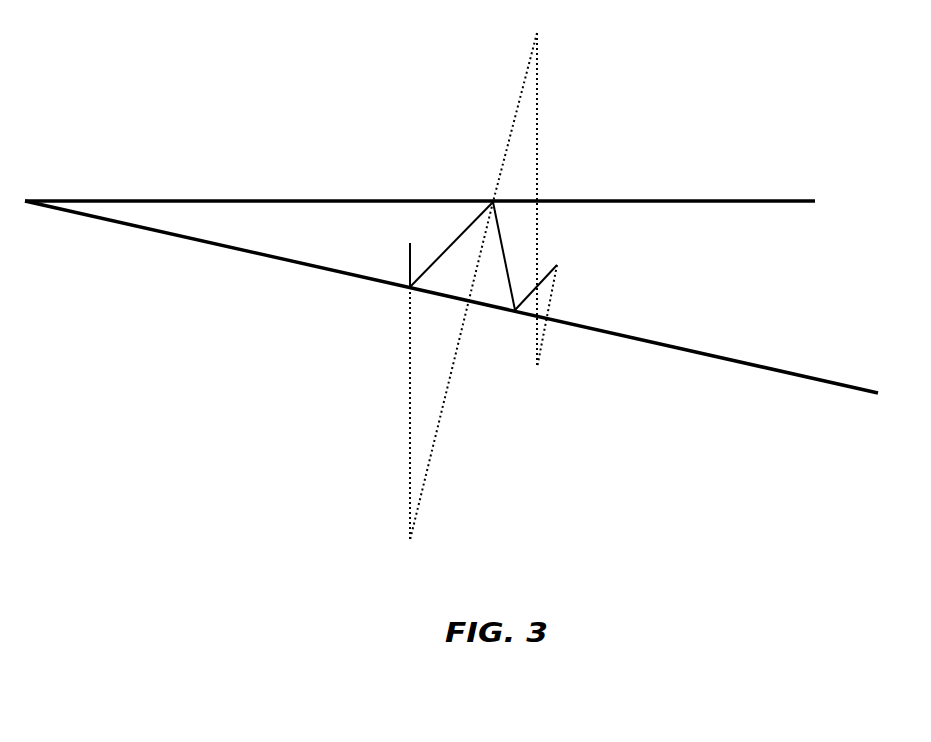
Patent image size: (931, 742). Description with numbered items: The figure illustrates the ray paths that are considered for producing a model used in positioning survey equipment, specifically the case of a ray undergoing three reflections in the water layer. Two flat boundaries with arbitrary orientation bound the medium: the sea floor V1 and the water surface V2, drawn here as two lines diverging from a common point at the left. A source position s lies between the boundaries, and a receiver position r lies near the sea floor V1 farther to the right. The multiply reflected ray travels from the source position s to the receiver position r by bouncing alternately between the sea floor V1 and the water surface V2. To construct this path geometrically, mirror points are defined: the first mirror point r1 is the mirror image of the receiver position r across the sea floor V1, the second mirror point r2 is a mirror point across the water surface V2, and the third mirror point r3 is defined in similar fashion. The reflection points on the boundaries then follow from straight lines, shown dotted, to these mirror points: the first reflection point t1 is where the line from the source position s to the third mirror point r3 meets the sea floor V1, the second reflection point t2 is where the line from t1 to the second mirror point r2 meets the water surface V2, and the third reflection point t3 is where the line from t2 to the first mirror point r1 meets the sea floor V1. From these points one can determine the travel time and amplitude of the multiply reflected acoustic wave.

The water surface V2 is at (420, 184).
The sea floor V1 is at (451, 297).
The source position s is at (400, 251).
The first reflection point t1 is at (435, 262).
The second reflection point t2 is at (493, 239).
The third reflection point t3 is at (524, 304).
The receiver position r is at (551, 299).
The first mirror point r1 is at (521, 215).
The second mirror point r2 is at (515, 105).
The third mirror point r3 is at (434, 377).